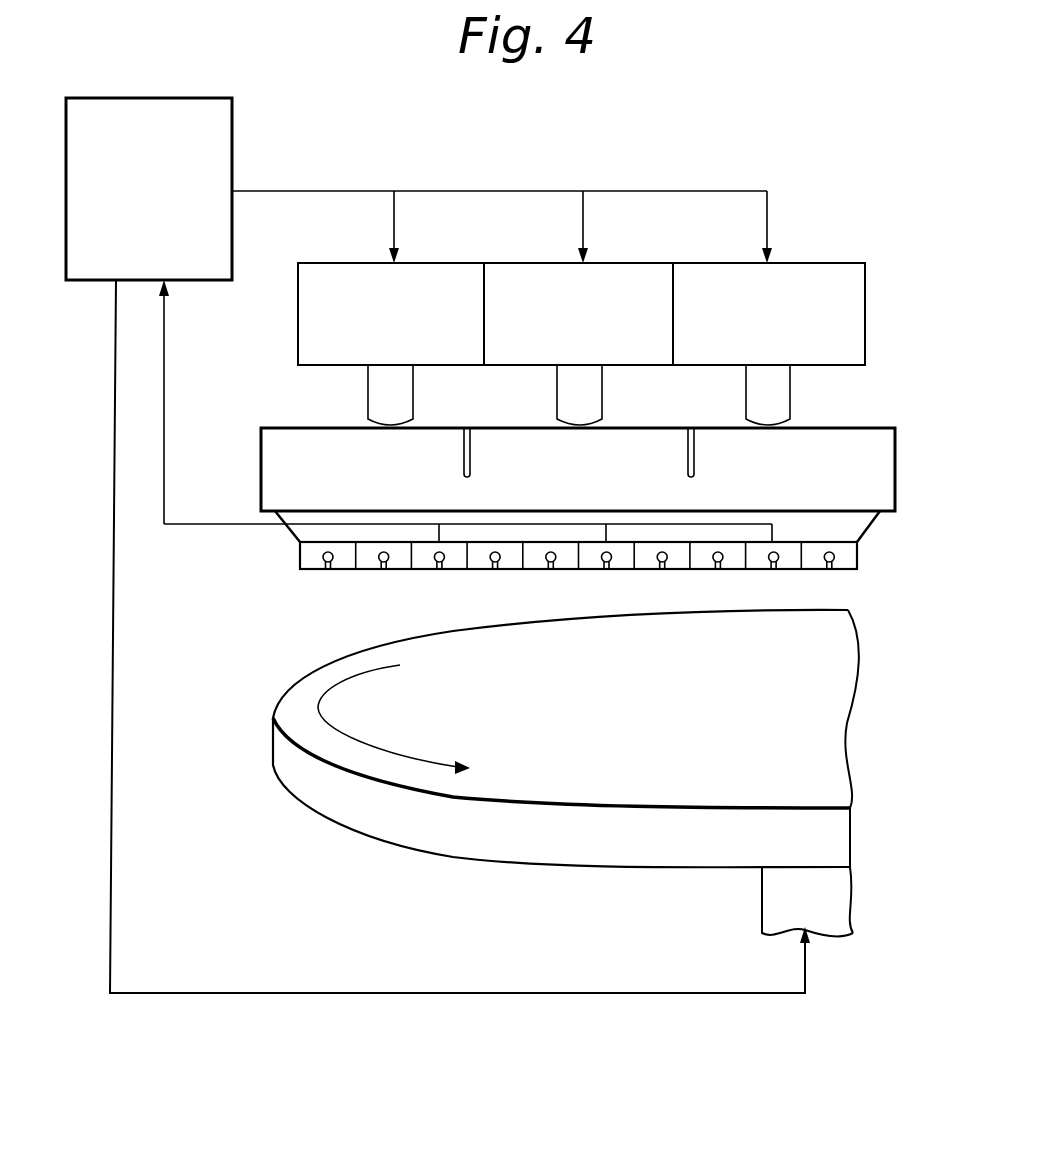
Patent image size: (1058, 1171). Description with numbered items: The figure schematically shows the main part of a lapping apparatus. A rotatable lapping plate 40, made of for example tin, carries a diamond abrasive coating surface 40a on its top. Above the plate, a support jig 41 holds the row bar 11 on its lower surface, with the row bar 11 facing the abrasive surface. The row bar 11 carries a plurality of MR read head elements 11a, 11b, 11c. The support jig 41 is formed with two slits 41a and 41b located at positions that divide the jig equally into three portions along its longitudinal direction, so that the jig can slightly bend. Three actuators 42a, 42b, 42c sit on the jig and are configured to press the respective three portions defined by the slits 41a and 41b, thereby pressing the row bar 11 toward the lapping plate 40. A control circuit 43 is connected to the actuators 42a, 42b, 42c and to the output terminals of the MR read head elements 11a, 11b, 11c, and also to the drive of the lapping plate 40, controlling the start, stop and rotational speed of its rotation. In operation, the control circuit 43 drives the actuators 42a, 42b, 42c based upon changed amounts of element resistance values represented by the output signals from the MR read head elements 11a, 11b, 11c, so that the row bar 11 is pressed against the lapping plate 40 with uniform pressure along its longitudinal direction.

The control circuit 43 is at (215, 128).
The actuator 42a is at (430, 282).
The actuator 42b is at (620, 282).
The actuator 42c is at (812, 282).
The support jig 41 is at (875, 474).
The slit 41a is at (467, 428).
The slit 41b is at (691, 428).
The row bar 11 is at (847, 553).
The MR read head element 11a is at (437, 555).
The MR read head element 11b is at (602, 558).
The MR read head element 11c is at (763, 558).
The lapping plate 40 is at (566, 775).
The diamond abrasive coating surface 40a is at (484, 719).